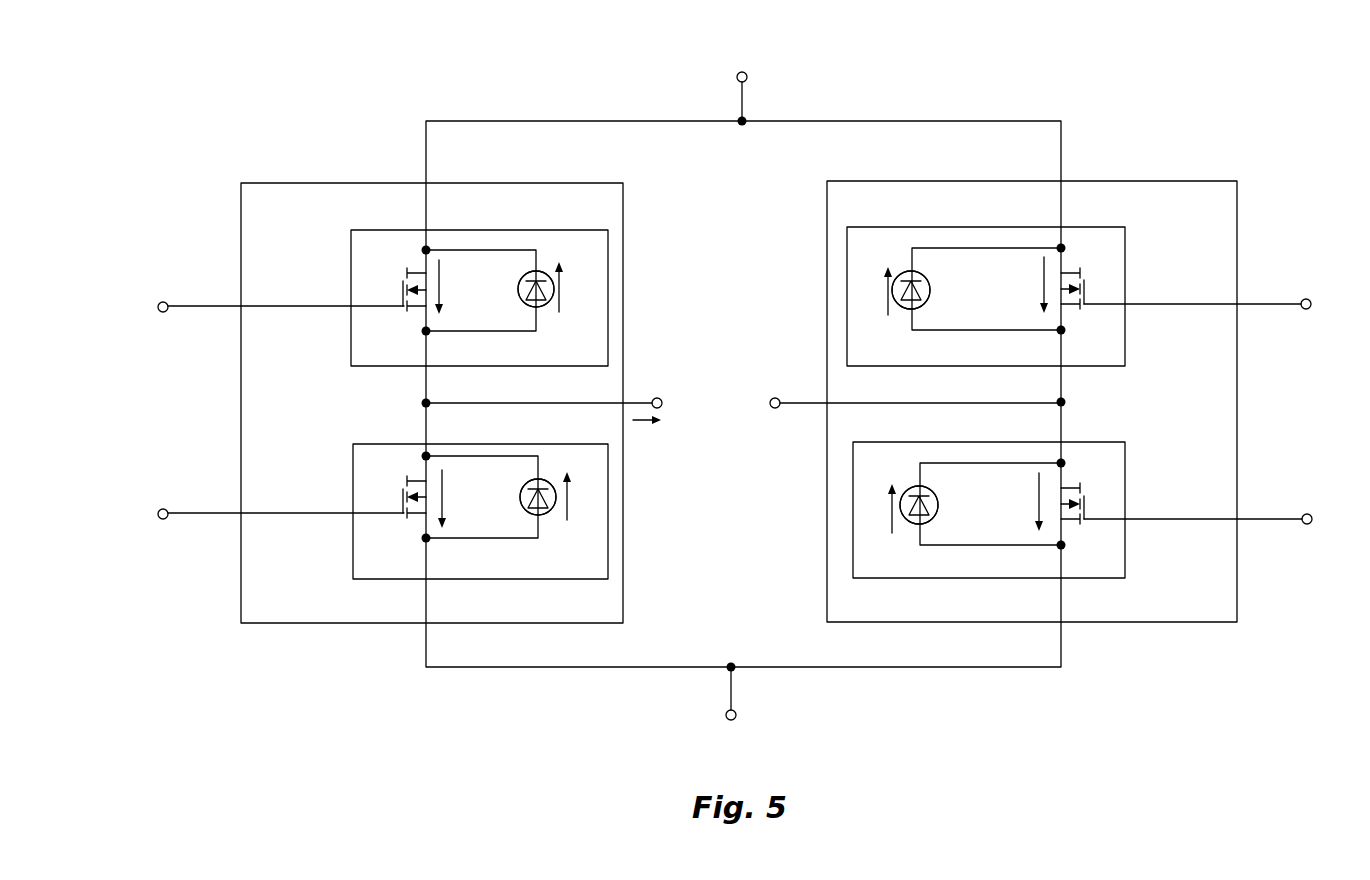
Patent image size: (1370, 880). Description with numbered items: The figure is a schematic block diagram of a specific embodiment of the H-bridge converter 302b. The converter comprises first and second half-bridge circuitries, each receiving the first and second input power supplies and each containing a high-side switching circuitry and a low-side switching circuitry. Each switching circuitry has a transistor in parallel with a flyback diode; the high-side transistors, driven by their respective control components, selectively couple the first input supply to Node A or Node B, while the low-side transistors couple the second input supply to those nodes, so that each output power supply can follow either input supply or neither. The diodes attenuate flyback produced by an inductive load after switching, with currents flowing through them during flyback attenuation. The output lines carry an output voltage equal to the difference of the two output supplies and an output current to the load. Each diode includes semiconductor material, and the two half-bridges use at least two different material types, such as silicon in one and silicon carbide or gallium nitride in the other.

The H-bridge converter 302b is at (183, 75).